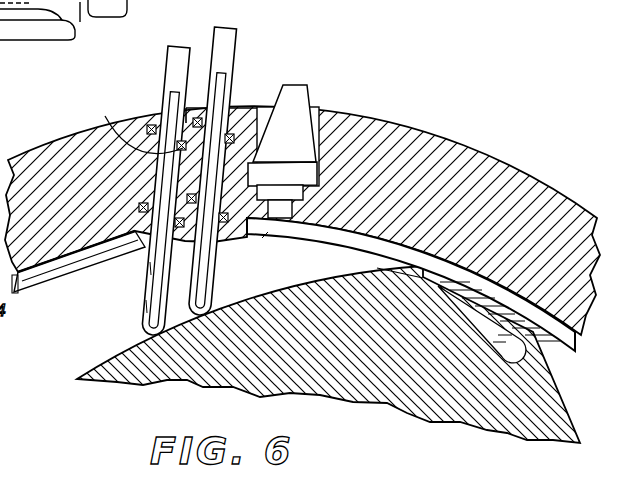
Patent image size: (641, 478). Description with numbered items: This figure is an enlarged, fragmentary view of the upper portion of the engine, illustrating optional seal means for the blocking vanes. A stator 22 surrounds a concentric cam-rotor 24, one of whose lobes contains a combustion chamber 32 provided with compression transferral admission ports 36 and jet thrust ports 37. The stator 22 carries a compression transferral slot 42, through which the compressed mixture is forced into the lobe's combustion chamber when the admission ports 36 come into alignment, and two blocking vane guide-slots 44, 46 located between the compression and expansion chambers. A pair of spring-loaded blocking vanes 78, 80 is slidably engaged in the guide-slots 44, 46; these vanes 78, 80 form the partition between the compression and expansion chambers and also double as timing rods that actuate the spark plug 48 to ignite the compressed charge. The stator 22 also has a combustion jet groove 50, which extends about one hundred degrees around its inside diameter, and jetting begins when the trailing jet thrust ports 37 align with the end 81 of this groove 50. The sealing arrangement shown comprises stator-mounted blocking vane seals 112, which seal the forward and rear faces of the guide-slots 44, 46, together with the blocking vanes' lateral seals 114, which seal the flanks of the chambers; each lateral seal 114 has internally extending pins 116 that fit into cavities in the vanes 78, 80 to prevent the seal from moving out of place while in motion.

The stator 22 is at (441, 136).
The cam-rotor 24 is at (128, 343).
The combustion chamber 32 is at (527, 357).
The compression transferral admission port 36 is at (553, 328).
The jet thrust port 37 is at (423, 268).
The compression transferral slot 42 is at (80, 258).
The blocking vane guide-slot 44 is at (136, 126).
The blocking vane guide-slot 46 is at (237, 107).
The spark plug 48 is at (295, 98).
The combustion jet groove 50 is at (330, 240).
The blocking vane 78 is at (175, 52).
The blocking vane 80 is at (228, 34).
The end of combustion jet groove 81 is at (268, 233).
The blocking vane seal 112 is at (183, 140).
The lateral seal 114 is at (151, 268).
The pin 116 is at (147, 307).